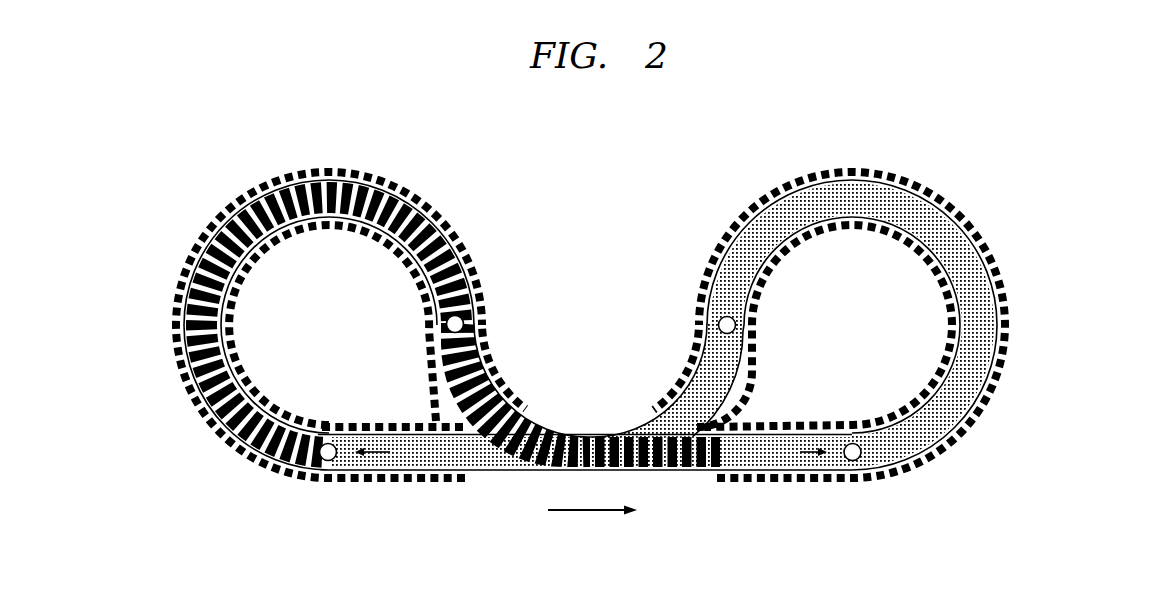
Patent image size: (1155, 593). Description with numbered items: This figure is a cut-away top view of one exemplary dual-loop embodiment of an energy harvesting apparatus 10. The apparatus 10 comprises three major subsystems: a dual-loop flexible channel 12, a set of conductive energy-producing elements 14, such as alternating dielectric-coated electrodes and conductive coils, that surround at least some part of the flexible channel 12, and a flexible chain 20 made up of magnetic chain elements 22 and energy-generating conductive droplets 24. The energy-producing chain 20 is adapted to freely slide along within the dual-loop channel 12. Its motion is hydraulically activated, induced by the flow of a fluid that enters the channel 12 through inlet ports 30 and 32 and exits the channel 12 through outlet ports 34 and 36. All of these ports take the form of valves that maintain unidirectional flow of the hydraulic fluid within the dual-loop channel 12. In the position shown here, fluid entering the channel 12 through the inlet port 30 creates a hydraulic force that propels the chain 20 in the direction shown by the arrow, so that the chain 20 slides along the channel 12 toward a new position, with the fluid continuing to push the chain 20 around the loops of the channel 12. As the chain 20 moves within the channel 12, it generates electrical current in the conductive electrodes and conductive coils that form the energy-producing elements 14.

The energy harvesting apparatus 10 is at (1050, 172).
The dual-loop flexible channel 12 is at (985, 440).
The conductive energy-producing elements 14 is at (564, 328).
The flexible chain 20 is at (248, 450).
The magnetic chain elements 22 is at (193, 386).
The energy-generating conductive droplets 24 is at (208, 414).
The inlet port 30 is at (329, 462).
The inlet port 32 is at (859, 461).
The outlet port 34 is at (476, 312).
The outlet port 36 is at (706, 313).